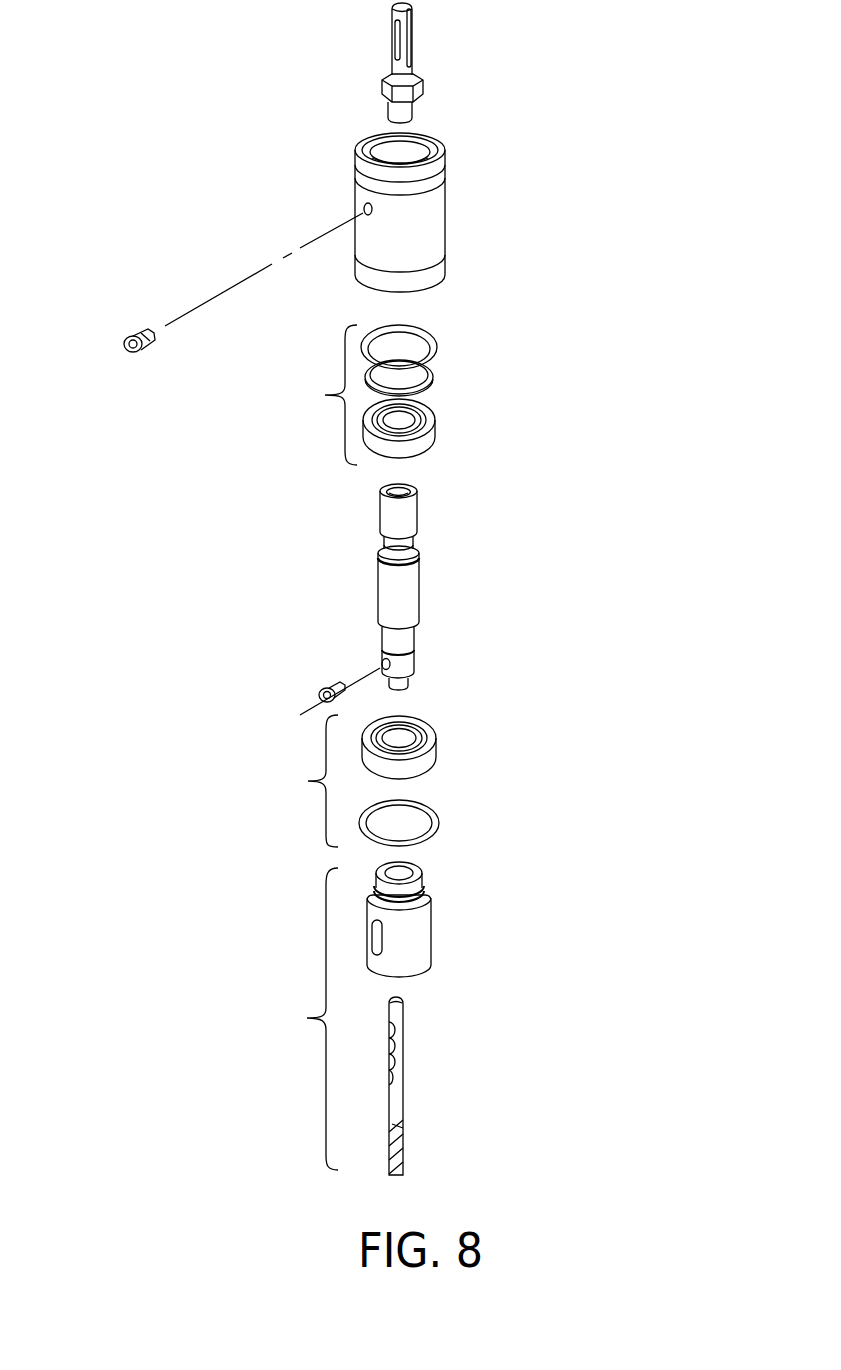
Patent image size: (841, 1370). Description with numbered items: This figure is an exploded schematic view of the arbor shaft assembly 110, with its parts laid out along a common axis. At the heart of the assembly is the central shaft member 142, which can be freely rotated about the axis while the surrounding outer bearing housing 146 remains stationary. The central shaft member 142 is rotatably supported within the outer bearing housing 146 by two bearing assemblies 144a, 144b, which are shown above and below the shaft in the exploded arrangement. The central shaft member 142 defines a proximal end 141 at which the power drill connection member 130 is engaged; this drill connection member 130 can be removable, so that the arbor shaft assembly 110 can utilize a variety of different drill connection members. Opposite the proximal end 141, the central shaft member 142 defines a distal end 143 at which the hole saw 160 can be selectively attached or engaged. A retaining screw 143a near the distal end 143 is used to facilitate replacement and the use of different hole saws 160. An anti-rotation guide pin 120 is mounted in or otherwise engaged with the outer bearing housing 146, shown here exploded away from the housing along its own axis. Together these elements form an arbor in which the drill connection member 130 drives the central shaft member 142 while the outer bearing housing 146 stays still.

The arbor shaft assembly 110 is at (112, 112).
The power drill connection member 130 is at (414, 26).
The outer bearing housing 146 is at (433, 234).
The anti-rotation guide pin 120 is at (134, 331).
The bearing assembly 144a is at (324, 394).
The proximal end 141 is at (378, 488).
The central shaft member 142 is at (408, 596).
The distal end 143 is at (406, 686).
The retaining screw 143a is at (325, 683).
The bearing assembly 144b is at (308, 781).
The hole saw 160 is at (307, 1018).